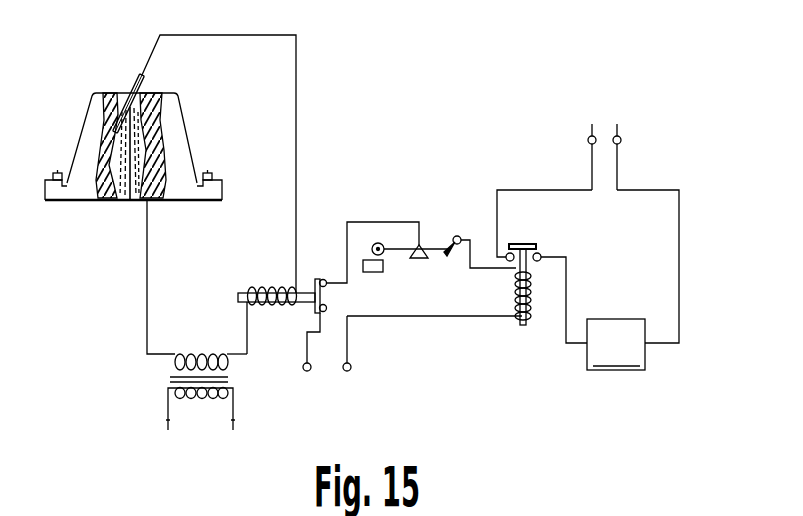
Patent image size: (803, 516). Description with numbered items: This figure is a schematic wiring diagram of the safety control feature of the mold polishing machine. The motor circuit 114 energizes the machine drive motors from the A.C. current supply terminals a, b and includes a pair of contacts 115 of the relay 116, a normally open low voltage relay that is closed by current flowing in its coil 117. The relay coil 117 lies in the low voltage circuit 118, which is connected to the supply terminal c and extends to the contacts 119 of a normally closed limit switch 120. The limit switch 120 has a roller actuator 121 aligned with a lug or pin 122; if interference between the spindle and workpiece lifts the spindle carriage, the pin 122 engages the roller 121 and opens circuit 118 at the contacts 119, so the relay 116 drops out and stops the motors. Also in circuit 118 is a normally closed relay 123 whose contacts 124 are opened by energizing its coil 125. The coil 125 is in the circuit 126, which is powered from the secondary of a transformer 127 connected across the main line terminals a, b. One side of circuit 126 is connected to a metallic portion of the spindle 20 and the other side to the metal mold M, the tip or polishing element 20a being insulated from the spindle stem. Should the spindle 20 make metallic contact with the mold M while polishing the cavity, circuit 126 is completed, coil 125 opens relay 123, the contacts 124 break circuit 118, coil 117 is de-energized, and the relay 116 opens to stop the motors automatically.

The spindle 20 is at (140, 80).
The tip or polishing element 20a is at (102, 121).
The terminal of the low voltage supply c is at (144, 97).
The mold or workpiece M is at (173, 148).
The motor circuit 114 is at (679, 276).
The contacts of the relay 115 is at (539, 262).
The relay 116 is at (520, 244).
The relay coil 117 is at (527, 319).
The circuit 118 is at (380, 222).
The contacts of the limit switch 119 is at (470, 226).
The limit switch 120 is at (416, 244).
The roller actuator 121 is at (373, 245).
The lug or pin 122 is at (383, 268).
The normally closed relay 123 is at (309, 311).
The contacts of the relay 124 is at (330, 266).
The relay coil 125 is at (274, 268).
The circuit 126 is at (297, 125).
The transformer 127 is at (170, 376).
The main line terminal a is at (591, 147).
The main line terminal b is at (617, 147).